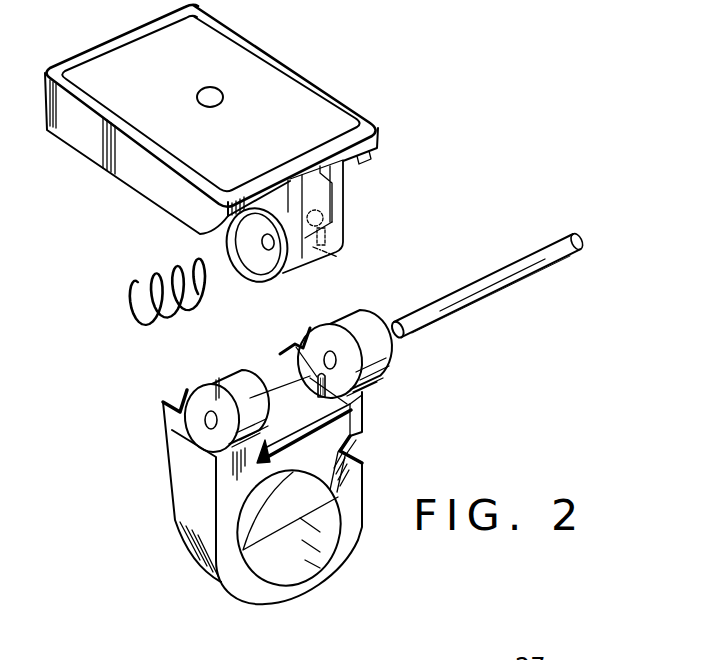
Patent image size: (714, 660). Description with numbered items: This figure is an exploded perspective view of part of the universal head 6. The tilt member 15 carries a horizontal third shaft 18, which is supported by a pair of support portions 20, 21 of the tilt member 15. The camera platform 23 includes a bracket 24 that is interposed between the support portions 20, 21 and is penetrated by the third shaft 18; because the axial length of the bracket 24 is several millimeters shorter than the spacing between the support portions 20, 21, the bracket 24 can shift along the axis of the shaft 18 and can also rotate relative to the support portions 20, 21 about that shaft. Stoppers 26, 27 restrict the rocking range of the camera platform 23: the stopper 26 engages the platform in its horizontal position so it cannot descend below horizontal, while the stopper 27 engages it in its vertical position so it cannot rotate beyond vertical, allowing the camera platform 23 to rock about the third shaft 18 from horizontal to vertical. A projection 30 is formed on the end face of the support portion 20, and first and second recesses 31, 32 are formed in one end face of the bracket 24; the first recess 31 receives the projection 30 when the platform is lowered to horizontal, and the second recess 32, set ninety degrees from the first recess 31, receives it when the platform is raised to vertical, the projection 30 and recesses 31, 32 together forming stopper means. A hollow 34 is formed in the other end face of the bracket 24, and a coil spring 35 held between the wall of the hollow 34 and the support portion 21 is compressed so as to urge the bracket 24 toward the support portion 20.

The universal head 6 is at (415, 103).
The tilt member 15 is at (172, 515).
The third shaft 18 is at (500, 275).
The support portion 20 is at (362, 310).
The support portion 21 is at (228, 372).
The camera platform 23 is at (292, 53).
The bracket 24 is at (297, 276).
The stopper 26 is at (180, 398).
The stopper 27 is at (345, 432).
The projection 30 is at (316, 378).
The first recess 31 is at (340, 250).
The second recess 32 is at (343, 236).
The hollow 34 is at (250, 272).
The coil spring 35 is at (125, 290).